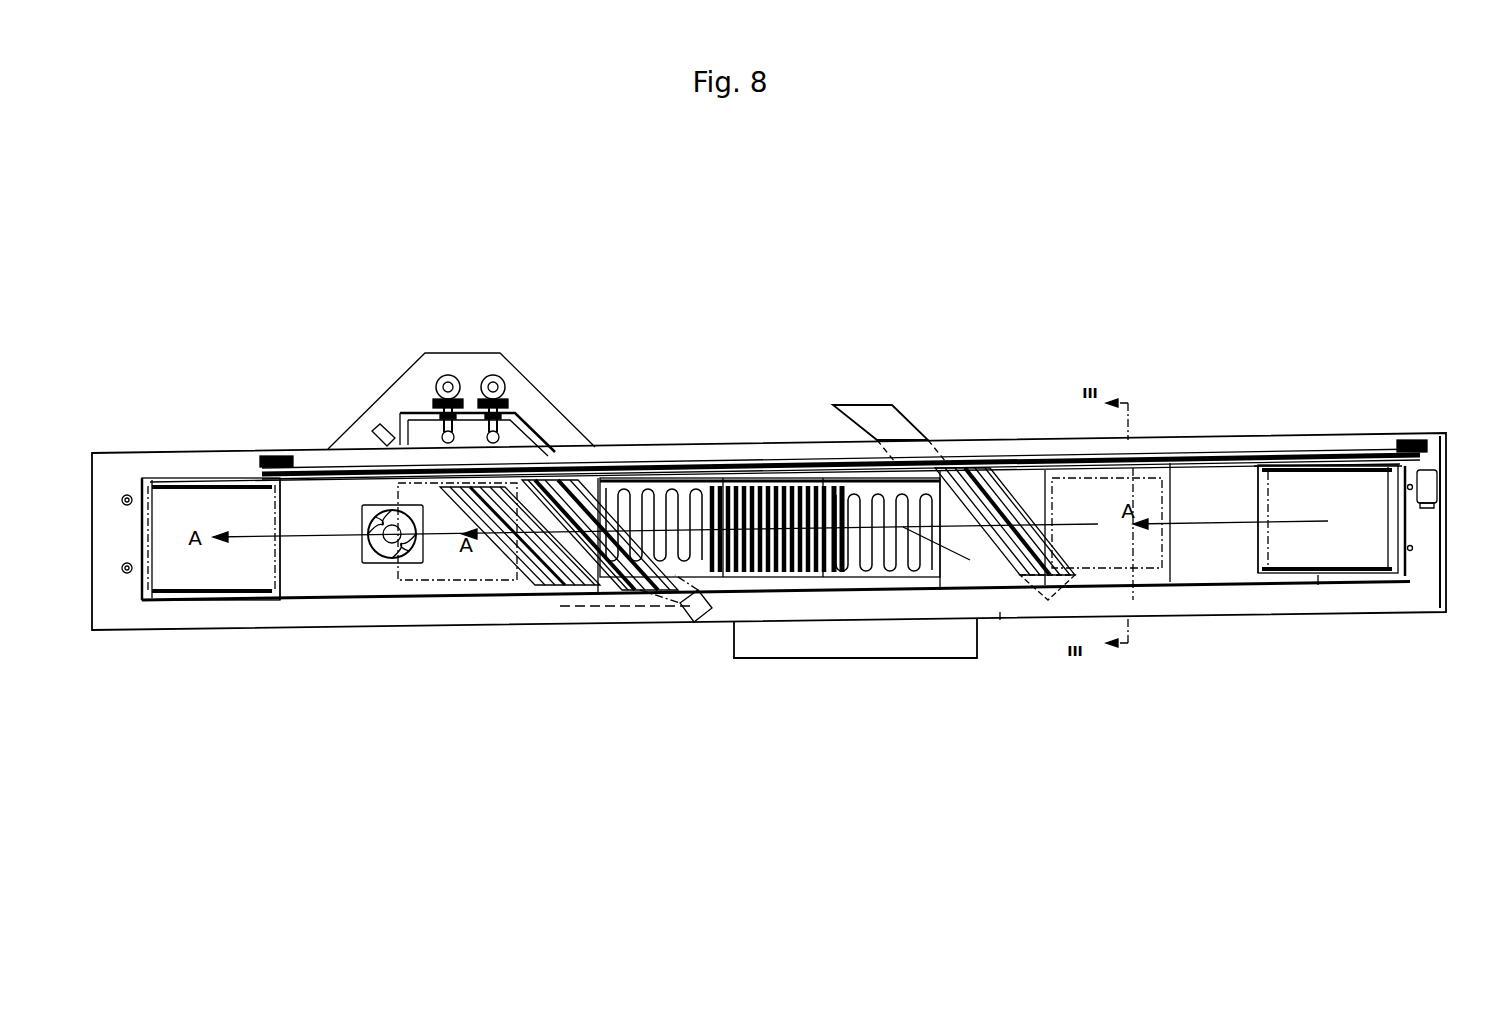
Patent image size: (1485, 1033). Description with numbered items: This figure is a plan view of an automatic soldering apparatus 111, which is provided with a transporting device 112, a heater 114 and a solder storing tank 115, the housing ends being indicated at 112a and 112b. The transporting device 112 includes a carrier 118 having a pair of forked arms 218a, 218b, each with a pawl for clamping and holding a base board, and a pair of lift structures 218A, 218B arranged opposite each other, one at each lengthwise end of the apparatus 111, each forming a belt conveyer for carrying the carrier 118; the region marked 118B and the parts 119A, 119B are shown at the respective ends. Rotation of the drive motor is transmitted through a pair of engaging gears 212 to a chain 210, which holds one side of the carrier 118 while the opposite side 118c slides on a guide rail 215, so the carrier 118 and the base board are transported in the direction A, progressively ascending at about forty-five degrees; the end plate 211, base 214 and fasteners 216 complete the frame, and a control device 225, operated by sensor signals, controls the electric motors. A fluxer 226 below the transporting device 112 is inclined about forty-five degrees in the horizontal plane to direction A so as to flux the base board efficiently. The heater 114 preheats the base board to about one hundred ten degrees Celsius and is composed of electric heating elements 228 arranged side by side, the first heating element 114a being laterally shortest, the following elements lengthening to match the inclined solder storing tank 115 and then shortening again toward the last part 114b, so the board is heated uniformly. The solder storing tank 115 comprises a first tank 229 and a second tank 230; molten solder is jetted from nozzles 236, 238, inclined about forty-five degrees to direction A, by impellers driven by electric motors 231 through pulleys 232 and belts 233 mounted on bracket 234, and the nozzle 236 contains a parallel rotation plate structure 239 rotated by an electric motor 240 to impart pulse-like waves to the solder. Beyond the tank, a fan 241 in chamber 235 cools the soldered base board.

The automatic soldering apparatus 111 is at (1292, 262).
The transporting device 112 is at (1370, 440).
The housing end wall 112a is at (1350, 555).
The housing end wall 112b is at (165, 500).
The heater 114 is at (777, 480).
The first heating element 114a is at (912, 590).
The last part of the heater 114b is at (677, 480).
The solder storing tank 115 is at (566, 368).
The carrier 118 is at (286, 560).
The chamber top wall 118B is at (1338, 468).
The opposite side of the carrier 118c is at (1135, 600).
The connector block 119A is at (1428, 468).
The rail end block 119B is at (270, 458).
The chain 210 is at (1228, 456).
The end plate 211 is at (1441, 436).
The gears 212 is at (1405, 440).
The base plate 214 is at (1003, 620).
The guide rail 215 is at (1240, 580).
The mounting screw 216 is at (122, 566).
The arm 218a is at (200, 490).
The lift structure 218A is at (132, 603).
The arm 218b is at (212, 605).
The lift structure 218B is at (1392, 580).
The control device 225 is at (818, 660).
The fluxer 226 is at (993, 478).
The electric heating elements 228 is at (752, 480).
The first tank 229 is at (620, 605).
The second tank 230 is at (540, 600).
The electric motor 231 is at (490, 378).
The pulley 232 is at (446, 376).
The belt 233 is at (438, 398).
The bracket plate 234 is at (425, 418).
The fan chamber 235 is at (470, 458).
The nozzle 236 is at (600, 600).
The nozzle 238 is at (505, 600).
The parallel rotation plate structure 239 is at (638, 605).
The electric motor 240 is at (702, 628).
The fan 241 is at (412, 565).